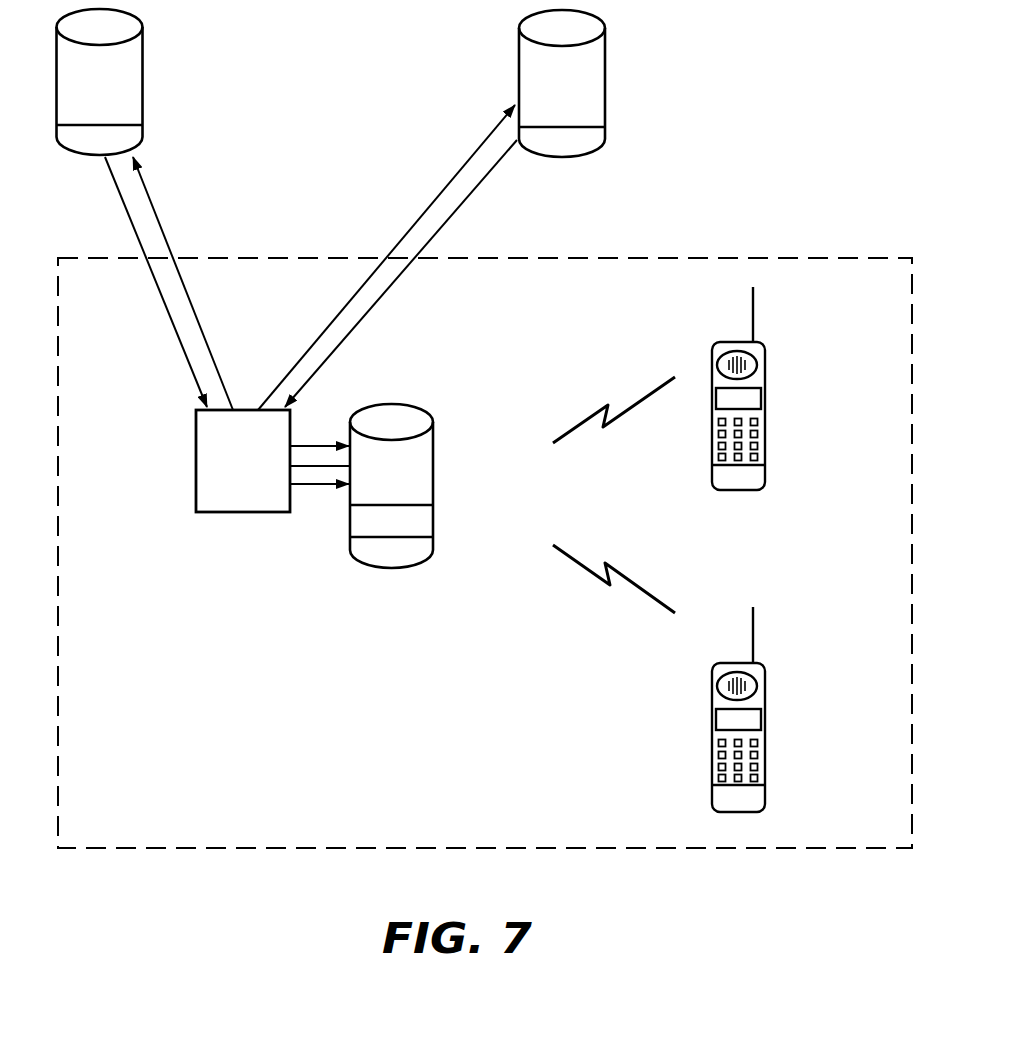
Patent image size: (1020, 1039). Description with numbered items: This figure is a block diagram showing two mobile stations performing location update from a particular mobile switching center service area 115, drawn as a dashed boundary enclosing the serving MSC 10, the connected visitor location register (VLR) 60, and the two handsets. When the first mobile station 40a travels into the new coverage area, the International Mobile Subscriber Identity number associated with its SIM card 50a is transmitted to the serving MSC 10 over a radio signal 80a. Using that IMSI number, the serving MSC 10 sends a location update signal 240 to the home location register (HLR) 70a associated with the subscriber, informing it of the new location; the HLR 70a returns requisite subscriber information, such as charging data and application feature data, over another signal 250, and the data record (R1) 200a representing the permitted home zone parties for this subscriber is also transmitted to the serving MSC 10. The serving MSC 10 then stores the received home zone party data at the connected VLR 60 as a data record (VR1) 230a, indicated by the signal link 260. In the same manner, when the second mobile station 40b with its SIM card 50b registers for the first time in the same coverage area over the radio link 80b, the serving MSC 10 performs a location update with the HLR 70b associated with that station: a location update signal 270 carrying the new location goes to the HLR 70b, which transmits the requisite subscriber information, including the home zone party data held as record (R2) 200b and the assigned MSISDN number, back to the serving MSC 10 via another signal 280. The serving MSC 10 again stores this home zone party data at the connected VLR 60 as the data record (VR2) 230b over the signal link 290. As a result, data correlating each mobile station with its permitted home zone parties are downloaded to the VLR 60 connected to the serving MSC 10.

The serving mobile switching center (MSC) 10 is at (248, 513).
The visitor location register (VLR) 60 is at (397, 420).
The home location register (HLR) 70a is at (605, 66).
The home location register (HLR) 70b is at (142, 65).
The data record (R1) 200a is at (597, 134).
The data record (R2) 200b is at (136, 134).
The data record (VR1) 230a is at (428, 543).
The data record (VR2) 230b is at (428, 513).
The location update signal 240 is at (417, 216).
The signal 250 is at (392, 287).
The signal link 260 is at (303, 440).
The location update signal 270 is at (190, 286).
The signal 280 is at (123, 208).
The signal link 290 is at (315, 488).
The MSC service area 115 is at (725, 258).
The first mobile station 40a is at (766, 414).
The mobile station 40b is at (766, 735).
The SIM card 50a is at (765, 477).
The SIM card 50b is at (765, 797).
The radio signal 80a is at (575, 432).
The radio link 80b is at (643, 590).